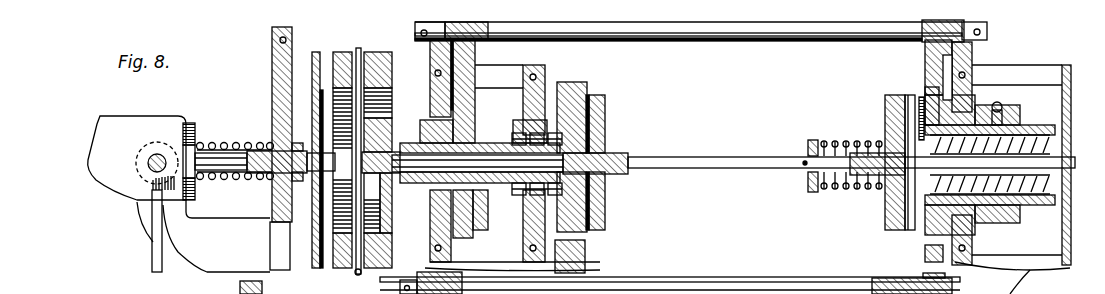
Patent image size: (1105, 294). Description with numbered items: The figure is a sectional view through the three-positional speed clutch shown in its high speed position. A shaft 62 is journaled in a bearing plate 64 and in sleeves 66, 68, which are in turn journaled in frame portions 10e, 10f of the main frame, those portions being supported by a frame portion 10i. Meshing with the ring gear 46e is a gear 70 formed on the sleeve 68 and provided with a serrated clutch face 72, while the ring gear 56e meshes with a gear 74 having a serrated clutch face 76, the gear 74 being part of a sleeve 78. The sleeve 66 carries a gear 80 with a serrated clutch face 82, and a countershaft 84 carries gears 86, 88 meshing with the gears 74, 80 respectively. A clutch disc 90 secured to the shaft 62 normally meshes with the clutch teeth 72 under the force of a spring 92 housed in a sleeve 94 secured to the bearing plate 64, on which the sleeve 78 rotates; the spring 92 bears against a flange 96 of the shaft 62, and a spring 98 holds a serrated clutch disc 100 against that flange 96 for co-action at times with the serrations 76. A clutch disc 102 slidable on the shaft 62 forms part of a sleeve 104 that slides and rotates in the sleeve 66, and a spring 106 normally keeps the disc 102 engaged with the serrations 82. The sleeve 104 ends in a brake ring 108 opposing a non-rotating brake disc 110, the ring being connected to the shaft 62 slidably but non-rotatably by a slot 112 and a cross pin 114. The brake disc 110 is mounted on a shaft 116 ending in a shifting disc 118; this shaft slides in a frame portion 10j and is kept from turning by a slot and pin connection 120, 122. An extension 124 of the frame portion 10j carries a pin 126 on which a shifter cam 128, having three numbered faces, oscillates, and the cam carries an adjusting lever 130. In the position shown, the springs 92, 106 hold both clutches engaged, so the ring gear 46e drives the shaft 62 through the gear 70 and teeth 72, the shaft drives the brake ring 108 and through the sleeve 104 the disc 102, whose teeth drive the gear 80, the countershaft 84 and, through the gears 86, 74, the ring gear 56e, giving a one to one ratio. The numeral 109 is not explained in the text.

The shaft 62 is at (702, 168).
The bearing plate 64 is at (1063, 230).
The sleeve 66 is at (432, 205).
The sleeve 68 is at (533, 226).
The gear 70 is at (588, 88).
The serrated clutch face 72 is at (605, 108).
The gear 74 is at (930, 102).
The serrated clutch face 76 is at (920, 105).
The sleeve 78 is at (980, 108).
The gear 80 is at (465, 240).
The serrated clutch face 82 is at (430, 120).
The countershaft 84 is at (726, 34).
The gear 86 is at (927, 52).
The gear 88 is at (475, 52).
The clutch disc 90 is at (606, 133).
The spring 92 is at (1055, 132).
The sleeve 94 is at (1057, 205).
The flange 96 is at (900, 140).
The spring 98 is at (838, 140).
The clutch disc 100 is at (888, 100).
The clutch disc 102 is at (486, 205).
The sleeve 104 is at (404, 181).
The spring 106 is at (580, 208).
The brake ring 108 is at (336, 52).
The nut 109 is at (965, 232).
The brake disc 110 is at (315, 243).
The slot 112 is at (394, 160).
The cross pin 114 is at (366, 100).
The shaft 116 is at (205, 145).
The shifting disc 118 is at (190, 123).
The slot 120 is at (268, 153).
The pin 122 is at (266, 150).
The extension 124 is at (181, 240).
The pin 126 is at (148, 162).
The shifter cam 128 is at (108, 170).
The adjusting lever 130 is at (152, 264).
The frame portion 10e is at (540, 100).
The frame portion 10f is at (430, 240).
The frame portion 10i is at (565, 270).
The frame portion 10j is at (271, 160).
The ring gear 46e is at (585, 256).
The ring gear 56e is at (930, 255).